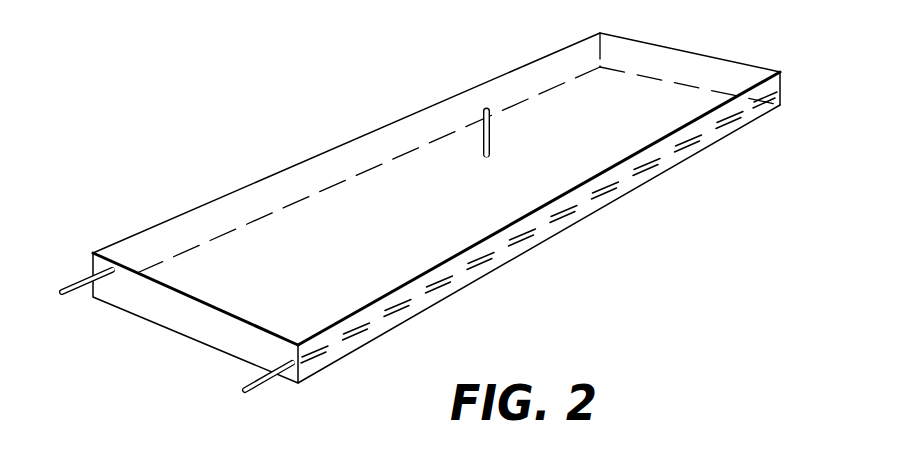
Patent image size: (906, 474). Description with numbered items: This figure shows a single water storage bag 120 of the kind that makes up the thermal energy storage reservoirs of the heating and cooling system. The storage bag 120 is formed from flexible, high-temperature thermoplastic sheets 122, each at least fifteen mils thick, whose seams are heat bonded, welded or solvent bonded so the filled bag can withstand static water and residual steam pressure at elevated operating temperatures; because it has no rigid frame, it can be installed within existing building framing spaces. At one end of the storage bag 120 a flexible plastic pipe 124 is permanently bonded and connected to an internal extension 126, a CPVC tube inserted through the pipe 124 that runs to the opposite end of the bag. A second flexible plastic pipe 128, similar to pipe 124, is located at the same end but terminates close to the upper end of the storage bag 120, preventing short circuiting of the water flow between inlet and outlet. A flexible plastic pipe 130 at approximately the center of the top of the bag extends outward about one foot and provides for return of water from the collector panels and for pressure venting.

The water storage bag 120 is at (657, 188).
The thermoplastic sheets 122 is at (712, 55).
The flexible plastic pipe 124 is at (248, 382).
The internal extension 126 is at (530, 232).
The flexible plastic pipe 128 is at (77, 293).
The flexible plastic pipe 130 is at (478, 115).